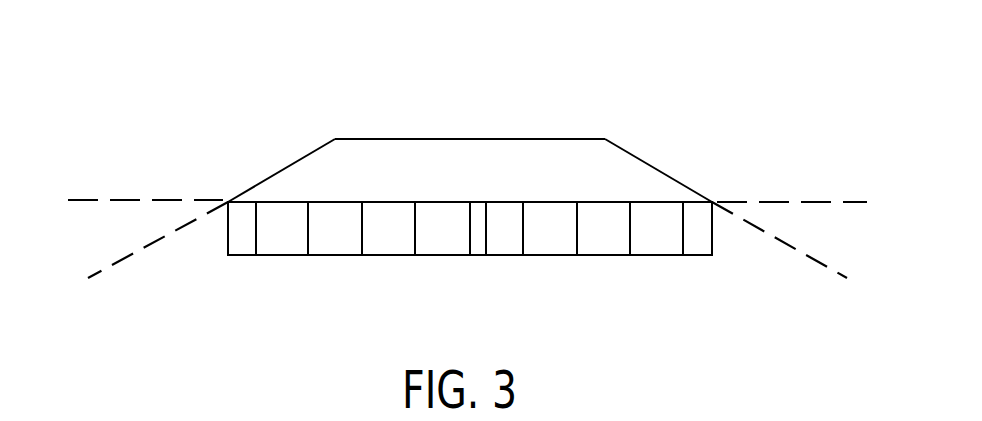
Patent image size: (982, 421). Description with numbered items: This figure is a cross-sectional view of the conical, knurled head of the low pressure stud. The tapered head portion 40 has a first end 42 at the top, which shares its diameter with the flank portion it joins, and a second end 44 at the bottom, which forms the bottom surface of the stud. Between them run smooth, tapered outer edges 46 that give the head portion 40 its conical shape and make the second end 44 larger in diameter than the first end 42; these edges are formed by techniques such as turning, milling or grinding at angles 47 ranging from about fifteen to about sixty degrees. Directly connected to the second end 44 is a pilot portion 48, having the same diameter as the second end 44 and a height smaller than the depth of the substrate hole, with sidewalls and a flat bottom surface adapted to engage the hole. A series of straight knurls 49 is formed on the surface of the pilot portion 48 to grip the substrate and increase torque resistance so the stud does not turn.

The tapered head portion 40 is at (614, 106).
The first end 42 is at (453, 136).
The second end 44 is at (445, 259).
The smooth, tapered outer edges 46 is at (290, 163).
The angles 47 is at (93, 201).
The pilot portion 48 is at (240, 240).
The straight knurls 49 is at (256, 225).